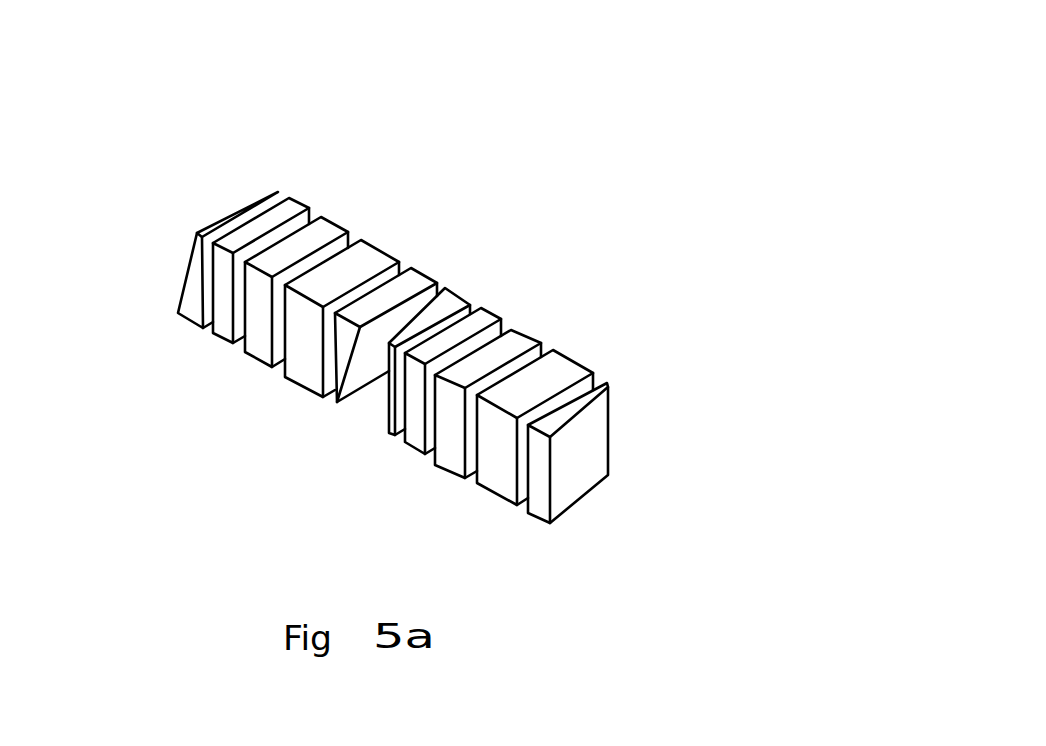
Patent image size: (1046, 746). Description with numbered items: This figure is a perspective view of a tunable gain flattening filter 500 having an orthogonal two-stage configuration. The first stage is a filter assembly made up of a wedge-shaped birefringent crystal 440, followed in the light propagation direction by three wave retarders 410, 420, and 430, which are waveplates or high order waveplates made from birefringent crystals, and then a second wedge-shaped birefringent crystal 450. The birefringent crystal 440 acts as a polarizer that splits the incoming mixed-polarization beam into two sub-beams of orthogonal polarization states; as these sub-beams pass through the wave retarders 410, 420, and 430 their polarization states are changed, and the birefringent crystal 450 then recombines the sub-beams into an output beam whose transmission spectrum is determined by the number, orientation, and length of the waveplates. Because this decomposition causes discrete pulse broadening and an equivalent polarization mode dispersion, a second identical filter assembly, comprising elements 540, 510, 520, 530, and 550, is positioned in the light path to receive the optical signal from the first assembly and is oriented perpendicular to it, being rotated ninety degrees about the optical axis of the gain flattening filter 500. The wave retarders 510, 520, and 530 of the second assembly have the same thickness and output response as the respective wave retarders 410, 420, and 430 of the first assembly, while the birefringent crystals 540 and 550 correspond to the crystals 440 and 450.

The tunable gain flattening filter 500 is at (406, 316).
The wave retarder 410 is at (291, 215).
The wave retarder 420 is at (339, 242).
The wave retarder 430 is at (383, 278).
The birefringent crystal 440 is at (170, 301).
The birefringent crystal 450 is at (303, 391).
The wave retarder 510 is at (497, 329).
The wave retarder 520 is at (544, 362).
The wave retarder 530 is at (602, 395).
The birefringent crystal 540 is at (391, 426).
The birefringent crystal 550 is at (590, 507).